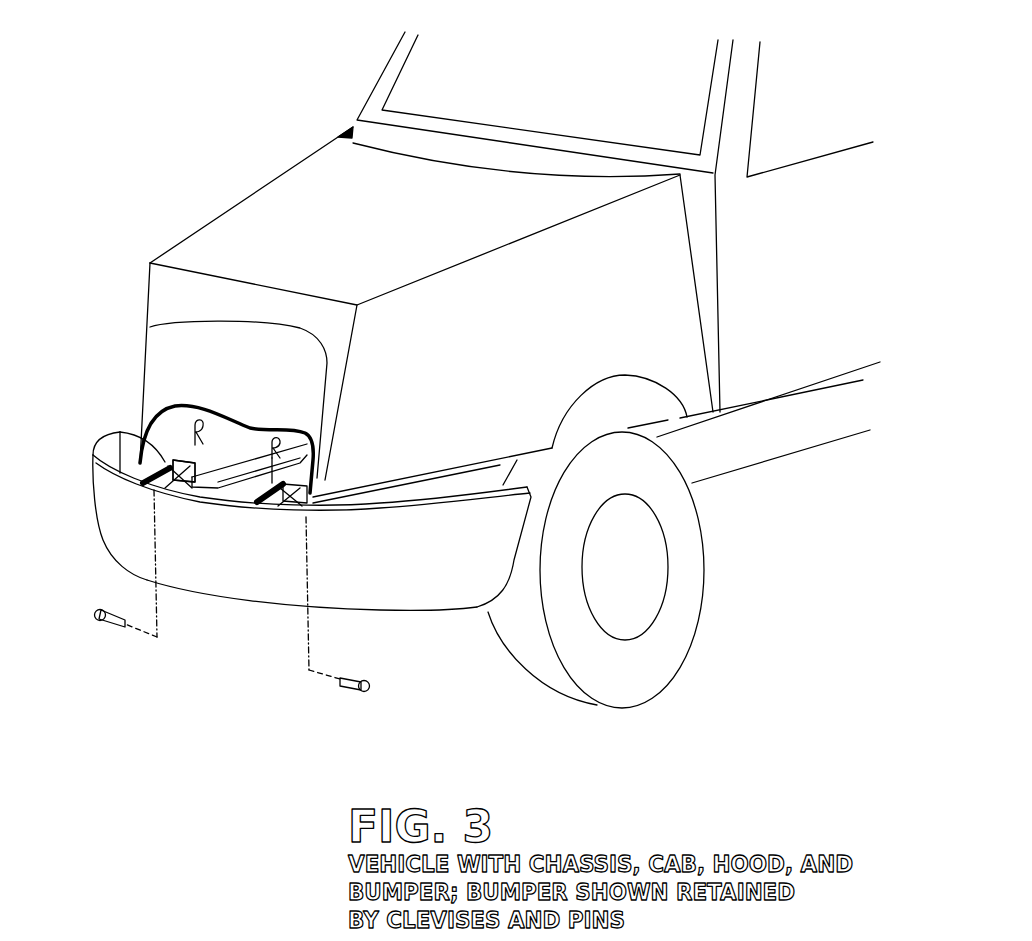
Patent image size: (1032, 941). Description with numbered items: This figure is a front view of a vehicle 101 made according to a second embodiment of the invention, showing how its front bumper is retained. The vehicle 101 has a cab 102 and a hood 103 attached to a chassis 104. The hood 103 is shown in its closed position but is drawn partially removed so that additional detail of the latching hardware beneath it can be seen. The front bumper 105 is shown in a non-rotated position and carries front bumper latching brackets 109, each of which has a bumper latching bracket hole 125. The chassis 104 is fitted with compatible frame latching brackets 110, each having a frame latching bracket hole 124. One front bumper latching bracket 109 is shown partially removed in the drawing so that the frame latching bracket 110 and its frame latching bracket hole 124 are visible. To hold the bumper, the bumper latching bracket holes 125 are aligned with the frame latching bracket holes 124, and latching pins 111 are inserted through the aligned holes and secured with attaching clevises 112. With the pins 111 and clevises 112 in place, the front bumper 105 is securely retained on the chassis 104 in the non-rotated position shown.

The vehicle 101 is at (387, 60).
The cab 102 is at (752, 365).
The hood 103 is at (258, 192).
The chassis 104 is at (743, 448).
The front bumper 105 is at (448, 600).
The front bumper latching bracket 109 is at (293, 496).
The frame latching bracket 110 is at (182, 460).
The latching pin 111 is at (347, 688).
The clevis 112 is at (283, 440).
The frame latching bracket hole 124 is at (168, 462).
The bumper latching bracket hole 125 is at (300, 509).